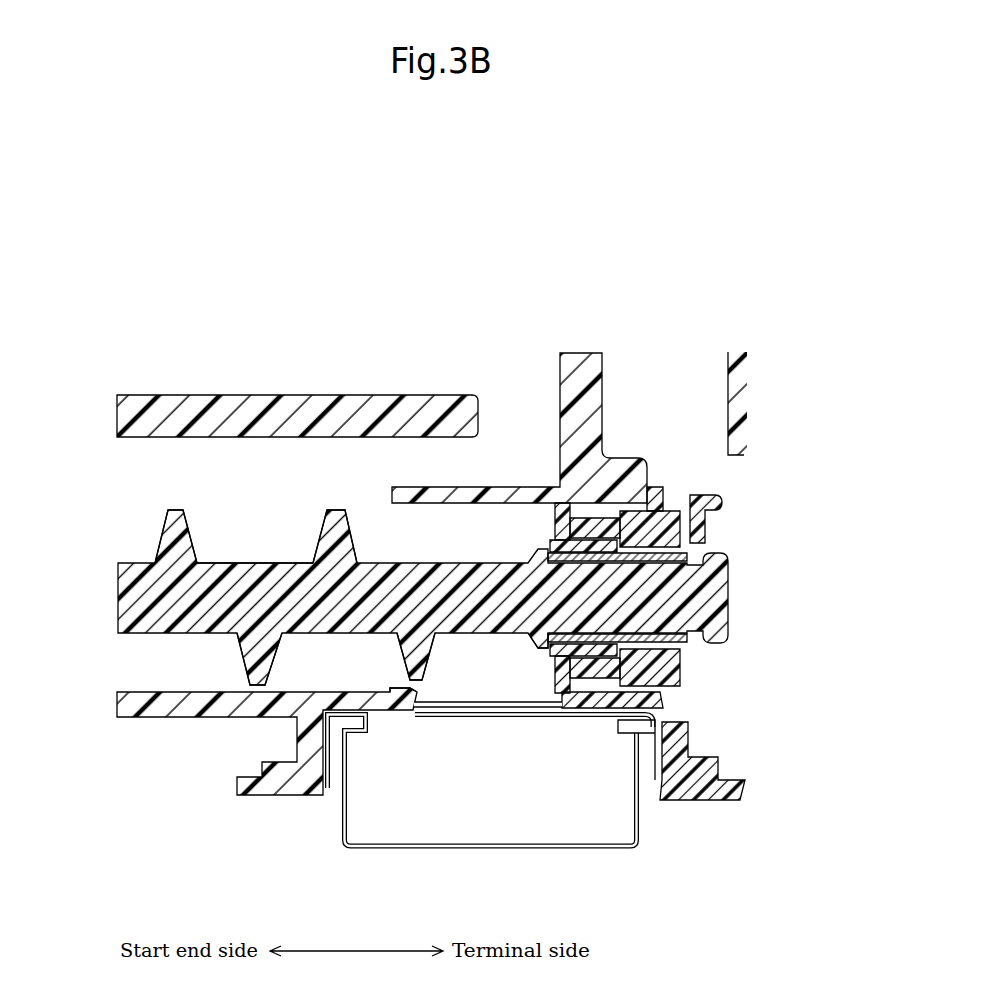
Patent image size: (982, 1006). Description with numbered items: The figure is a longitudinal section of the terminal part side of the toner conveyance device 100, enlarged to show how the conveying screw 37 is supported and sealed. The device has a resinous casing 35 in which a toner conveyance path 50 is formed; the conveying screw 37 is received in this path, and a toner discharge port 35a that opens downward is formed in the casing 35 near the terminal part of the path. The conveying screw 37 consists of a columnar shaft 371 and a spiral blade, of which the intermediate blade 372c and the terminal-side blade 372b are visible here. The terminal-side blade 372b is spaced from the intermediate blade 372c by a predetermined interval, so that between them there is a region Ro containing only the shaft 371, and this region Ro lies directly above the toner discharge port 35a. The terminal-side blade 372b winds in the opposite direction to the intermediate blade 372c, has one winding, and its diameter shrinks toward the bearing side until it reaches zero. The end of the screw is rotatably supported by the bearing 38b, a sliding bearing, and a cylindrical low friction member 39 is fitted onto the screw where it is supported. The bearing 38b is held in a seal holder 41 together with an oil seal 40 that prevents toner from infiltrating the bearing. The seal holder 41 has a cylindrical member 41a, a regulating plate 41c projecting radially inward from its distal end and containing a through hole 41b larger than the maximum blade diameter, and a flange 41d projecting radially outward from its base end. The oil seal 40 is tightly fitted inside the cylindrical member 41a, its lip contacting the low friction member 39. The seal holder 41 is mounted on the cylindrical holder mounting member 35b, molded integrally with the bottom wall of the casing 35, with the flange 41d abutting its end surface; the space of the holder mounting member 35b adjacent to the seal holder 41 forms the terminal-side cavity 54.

The toner conveyance device 100 is at (129, 465).
The casing 35 is at (216, 383).
The toner discharge port 35a is at (448, 717).
The holder mounting member 35b is at (455, 487).
The conveying screw 37 is at (262, 535).
The shaft 371 is at (148, 561).
The terminal-side blade 372b is at (528, 640).
The intermediate blade 372c is at (243, 655).
The bearing 38b is at (680, 663).
The low friction member 39 is at (548, 703).
The oil seal 40 is at (580, 710).
The seal holder 41 is at (678, 506).
The cylindrical member 41a is at (560, 700).
The through hole 41b is at (548, 549).
The regulating plate 41c is at (555, 522).
The flange 41d is at (664, 703).
The toner conveyance path 50 is at (355, 502).
The terminal-side cavity 54 is at (446, 563).
The region Ro is at (459, 642).